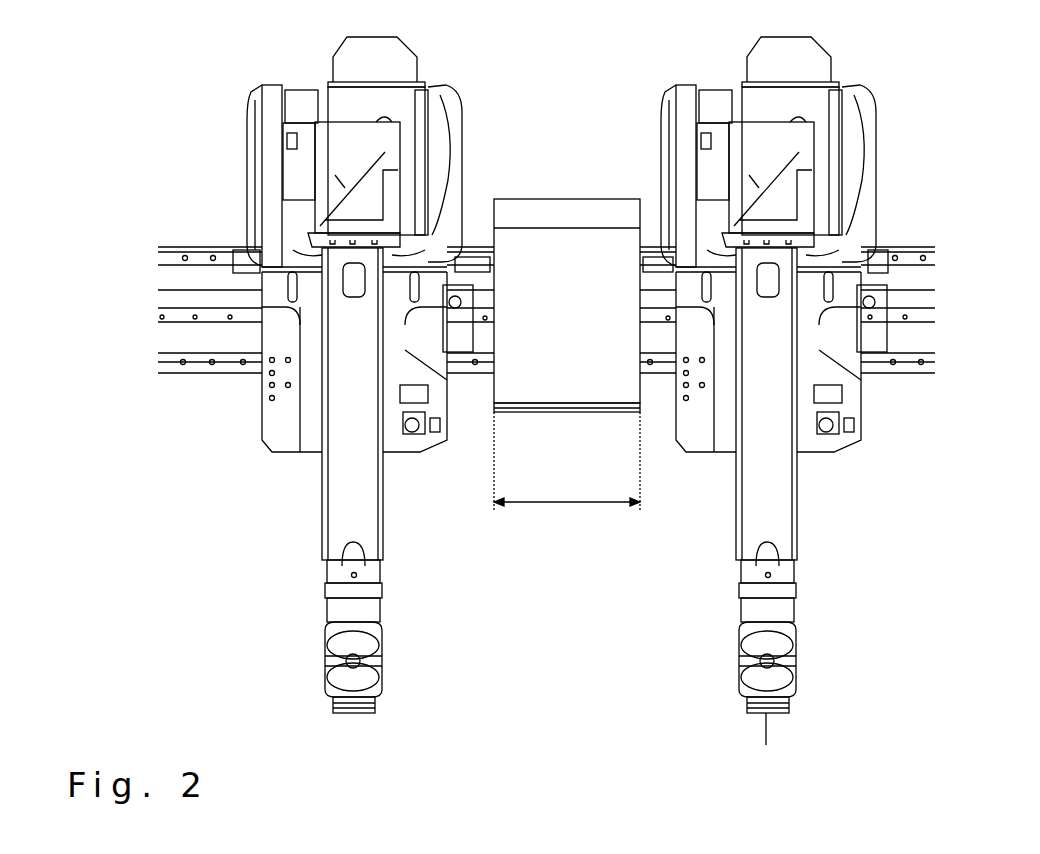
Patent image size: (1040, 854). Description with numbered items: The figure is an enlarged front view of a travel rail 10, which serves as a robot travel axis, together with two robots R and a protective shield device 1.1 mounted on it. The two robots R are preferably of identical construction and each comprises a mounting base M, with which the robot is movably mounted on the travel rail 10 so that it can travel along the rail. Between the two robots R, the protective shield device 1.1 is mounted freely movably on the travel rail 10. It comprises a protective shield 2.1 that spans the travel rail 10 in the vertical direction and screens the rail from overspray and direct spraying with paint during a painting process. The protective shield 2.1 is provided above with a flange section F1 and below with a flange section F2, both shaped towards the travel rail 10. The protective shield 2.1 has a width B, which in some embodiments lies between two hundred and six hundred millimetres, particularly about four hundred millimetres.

The travel rail 10 is at (212, 258).
The robot R is at (262, 538).
The mounting base M is at (268, 392).
The protective shield device 1.1 is at (542, 190).
The protective shield 2.1 is at (575, 345).
The flange section F1 is at (585, 212).
The flange section F2 is at (613, 408).
The width B is at (567, 472).